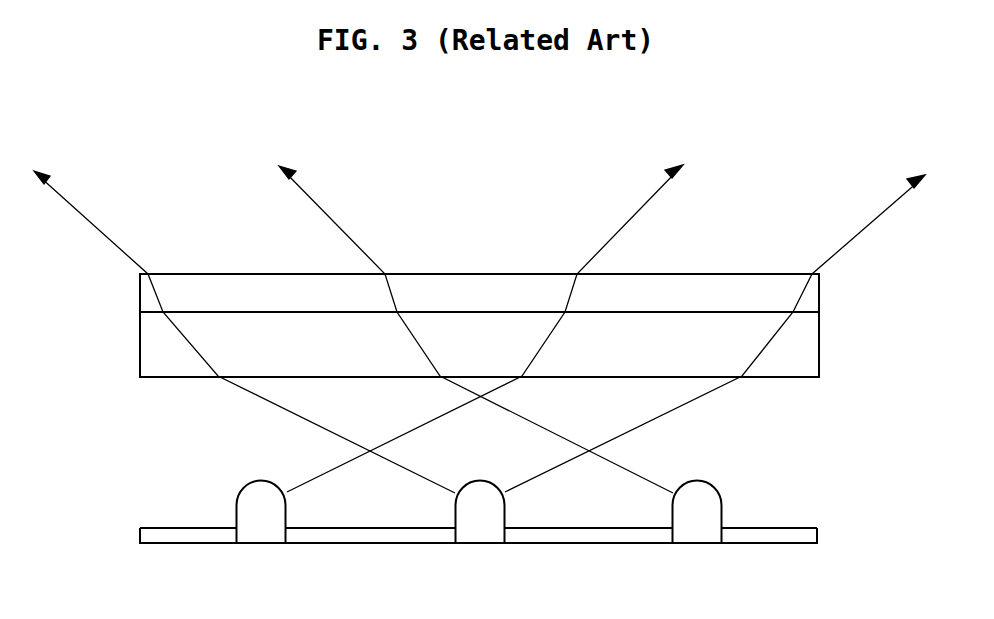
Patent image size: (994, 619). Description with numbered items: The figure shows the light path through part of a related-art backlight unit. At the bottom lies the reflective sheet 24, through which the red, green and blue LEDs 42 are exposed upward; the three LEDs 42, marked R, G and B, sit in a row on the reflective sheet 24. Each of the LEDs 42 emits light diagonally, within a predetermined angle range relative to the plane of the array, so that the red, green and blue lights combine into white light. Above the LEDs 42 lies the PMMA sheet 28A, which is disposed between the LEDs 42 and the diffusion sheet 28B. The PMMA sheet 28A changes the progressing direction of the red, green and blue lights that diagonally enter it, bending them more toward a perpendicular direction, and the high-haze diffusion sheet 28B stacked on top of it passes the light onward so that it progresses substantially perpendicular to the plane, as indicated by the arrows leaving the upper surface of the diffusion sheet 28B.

The PMMA sheet 28A is at (820, 348).
The diffusion sheet 28B is at (820, 294).
The LEDs 42 is at (697, 532).
The reflective sheet 24 is at (783, 538).